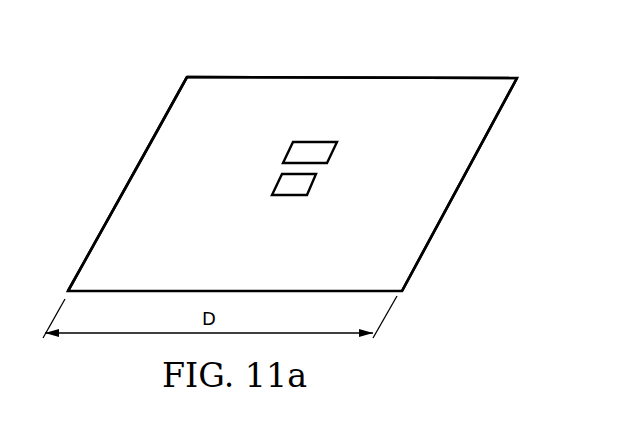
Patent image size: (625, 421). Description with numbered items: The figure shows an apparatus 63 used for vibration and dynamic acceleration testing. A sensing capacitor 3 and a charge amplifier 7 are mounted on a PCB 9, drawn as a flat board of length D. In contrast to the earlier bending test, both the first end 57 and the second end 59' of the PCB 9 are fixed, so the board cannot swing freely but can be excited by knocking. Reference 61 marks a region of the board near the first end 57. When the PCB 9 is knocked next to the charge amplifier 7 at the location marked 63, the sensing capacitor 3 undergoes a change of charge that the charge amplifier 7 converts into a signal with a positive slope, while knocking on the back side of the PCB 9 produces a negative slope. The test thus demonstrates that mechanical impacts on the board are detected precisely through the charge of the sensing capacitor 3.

The PCB 9 is at (107, 213).
The upper edge portion of the plate 61 is at (174, 100).
The first end 57 is at (153, 138).
The apparatus 63 is at (352, 77).
The second end 59' is at (459, 184).
The charge amplifier 7 is at (313, 141).
The sensing capacitor 3 is at (287, 196).